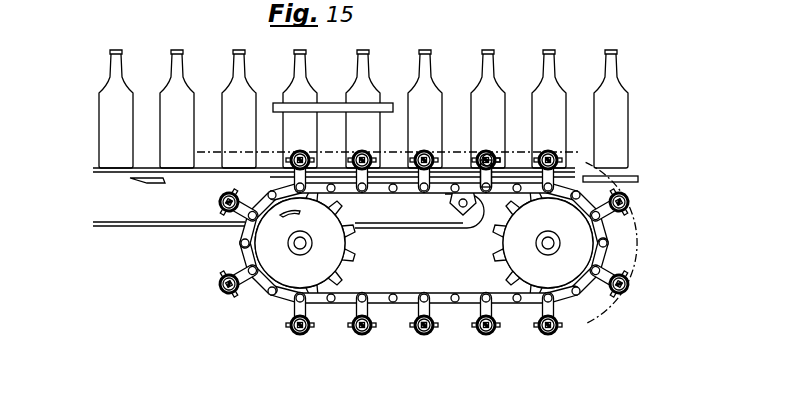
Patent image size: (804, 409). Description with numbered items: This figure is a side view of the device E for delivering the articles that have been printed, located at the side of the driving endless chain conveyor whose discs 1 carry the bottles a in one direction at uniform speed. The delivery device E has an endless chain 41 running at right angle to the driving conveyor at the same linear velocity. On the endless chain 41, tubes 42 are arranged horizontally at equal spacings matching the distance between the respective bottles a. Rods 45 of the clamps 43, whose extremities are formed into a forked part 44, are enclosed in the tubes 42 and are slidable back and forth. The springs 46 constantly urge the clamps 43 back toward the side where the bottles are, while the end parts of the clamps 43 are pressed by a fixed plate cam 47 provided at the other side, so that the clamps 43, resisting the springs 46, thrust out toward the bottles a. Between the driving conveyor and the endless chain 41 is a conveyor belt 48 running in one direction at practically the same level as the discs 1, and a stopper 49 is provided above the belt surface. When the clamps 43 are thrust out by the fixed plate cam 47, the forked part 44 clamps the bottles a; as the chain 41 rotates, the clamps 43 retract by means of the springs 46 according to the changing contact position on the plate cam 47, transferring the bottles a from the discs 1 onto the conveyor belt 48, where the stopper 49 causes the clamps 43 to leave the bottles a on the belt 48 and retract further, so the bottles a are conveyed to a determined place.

The bottles a is at (240, 72).
The discs 1 is at (273, 168).
The endless chain 41 is at (403, 292).
The tubes 42 is at (492, 155).
The clamps 43 is at (477, 162).
The forked part 44 is at (500, 162).
The rods 45 is at (481, 156).
The springs 46 is at (215, 210).
The fixed plate cam 47 is at (392, 150).
The conveyor belt 48 is at (183, 178).
The stopper 49 is at (331, 155).
The device for delivering the articles that have been printed E is at (408, 225).